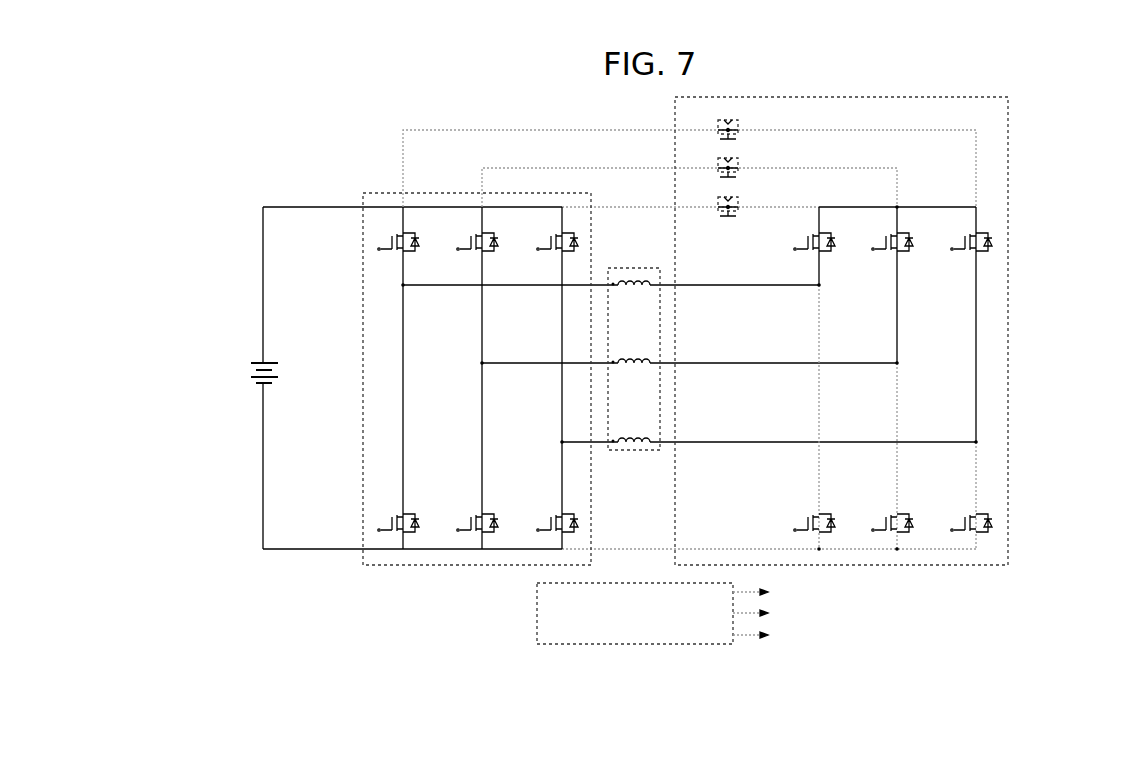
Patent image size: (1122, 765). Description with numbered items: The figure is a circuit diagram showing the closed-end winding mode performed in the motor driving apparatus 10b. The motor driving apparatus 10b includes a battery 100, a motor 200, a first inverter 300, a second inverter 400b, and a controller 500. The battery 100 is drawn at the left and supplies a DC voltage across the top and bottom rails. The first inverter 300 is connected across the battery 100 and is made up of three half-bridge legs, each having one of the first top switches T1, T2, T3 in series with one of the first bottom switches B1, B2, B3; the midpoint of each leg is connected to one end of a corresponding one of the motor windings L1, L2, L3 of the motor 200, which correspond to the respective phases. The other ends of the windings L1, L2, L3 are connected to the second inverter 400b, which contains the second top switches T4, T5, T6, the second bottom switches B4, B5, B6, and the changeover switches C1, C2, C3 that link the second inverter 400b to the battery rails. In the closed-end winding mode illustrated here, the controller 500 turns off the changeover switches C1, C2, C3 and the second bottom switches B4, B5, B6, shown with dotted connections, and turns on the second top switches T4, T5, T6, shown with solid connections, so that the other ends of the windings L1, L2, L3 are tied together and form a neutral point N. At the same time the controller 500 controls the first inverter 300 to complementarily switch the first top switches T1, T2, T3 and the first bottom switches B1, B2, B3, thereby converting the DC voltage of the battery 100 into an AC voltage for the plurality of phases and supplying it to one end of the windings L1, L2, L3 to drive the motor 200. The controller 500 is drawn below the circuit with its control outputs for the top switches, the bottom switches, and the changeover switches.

The motor driving apparatus 10b is at (280, 157).
The battery 100 is at (252, 363).
The motor 200 is at (633, 266).
The first inverter 300 is at (373, 193).
The second inverter 400b is at (1009, 210).
The controller 500 is at (537, 613).
The first top switch T1 is at (398, 252).
The first top switch T2 is at (477, 252).
The first top switch T3 is at (557, 252).
The second top switch T4 is at (814, 251).
The second top switch T5 is at (891, 251).
The second top switch T6 is at (970, 251).
The first bottom switch B1 is at (398, 515).
The first bottom switch B2 is at (477, 515).
The first bottom switch B3 is at (557, 515).
The second bottom switch B4 is at (814, 515).
The second bottom switch B5 is at (891, 515).
The second bottom switch B6 is at (970, 515).
The changeover switch C1 is at (741, 204).
The changeover switch C2 is at (741, 166).
The changeover switch C3 is at (741, 128).
The winding L1 is at (631, 292).
The winding L2 is at (631, 371).
The winding L3 is at (631, 433).
The neutral point N is at (903, 200).